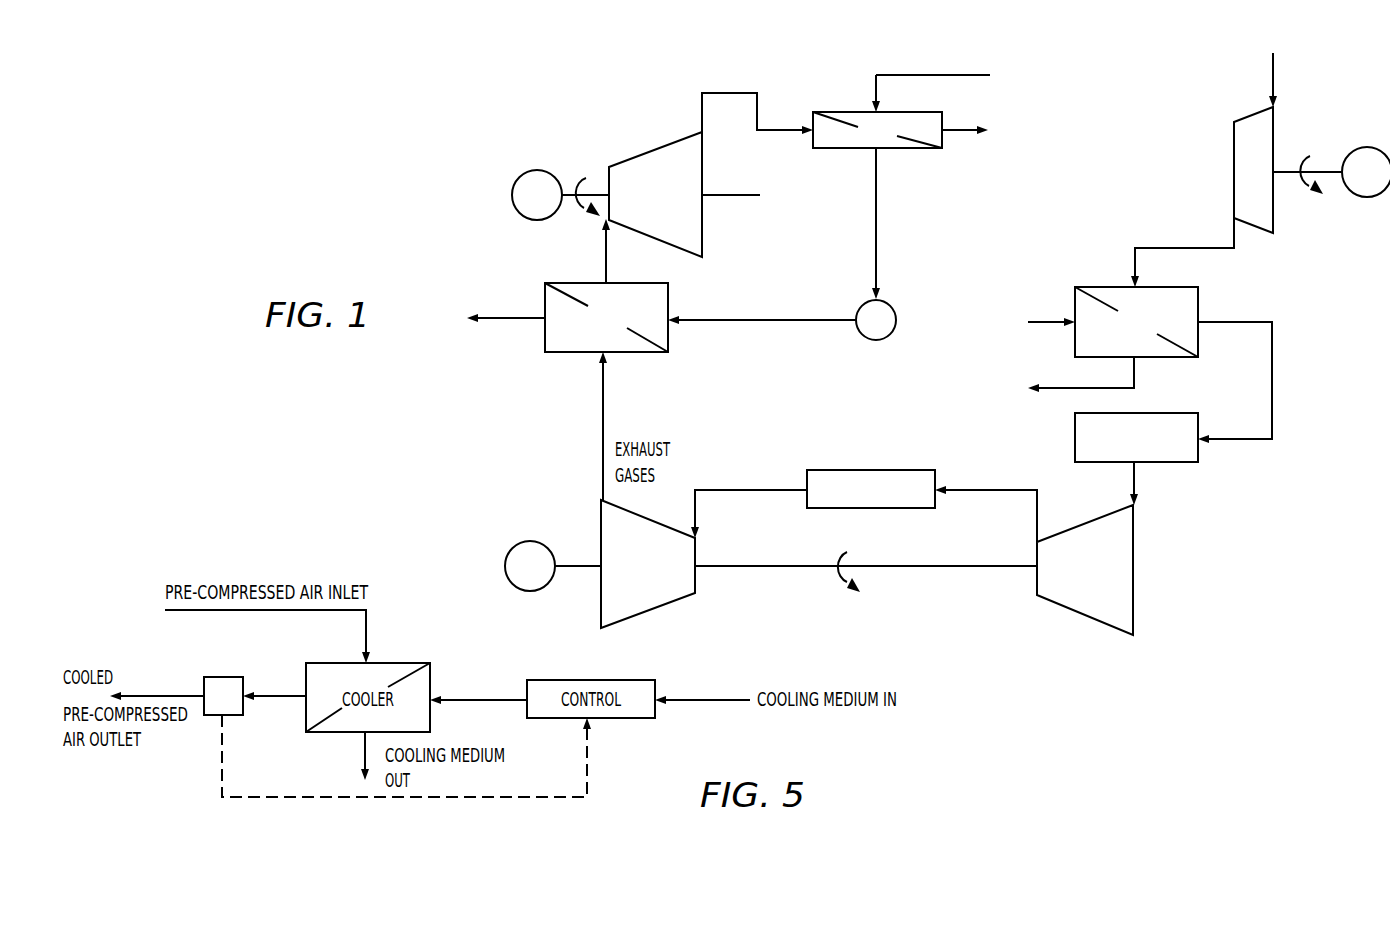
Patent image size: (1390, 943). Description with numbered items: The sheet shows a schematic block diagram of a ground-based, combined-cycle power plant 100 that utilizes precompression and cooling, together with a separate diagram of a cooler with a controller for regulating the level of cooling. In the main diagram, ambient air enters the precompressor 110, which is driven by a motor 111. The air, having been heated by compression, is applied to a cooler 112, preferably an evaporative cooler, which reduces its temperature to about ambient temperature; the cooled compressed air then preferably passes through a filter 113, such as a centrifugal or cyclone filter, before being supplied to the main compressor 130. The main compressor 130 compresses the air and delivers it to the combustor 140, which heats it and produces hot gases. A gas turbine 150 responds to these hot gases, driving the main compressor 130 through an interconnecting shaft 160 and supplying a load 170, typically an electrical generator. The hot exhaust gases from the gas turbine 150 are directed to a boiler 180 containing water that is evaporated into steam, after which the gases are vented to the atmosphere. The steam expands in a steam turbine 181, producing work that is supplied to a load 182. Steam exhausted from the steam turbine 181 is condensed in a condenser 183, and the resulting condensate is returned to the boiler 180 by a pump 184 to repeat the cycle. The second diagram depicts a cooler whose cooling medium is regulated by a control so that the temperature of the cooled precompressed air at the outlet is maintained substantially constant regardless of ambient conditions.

The combined-cycle power plant 100 is at (382, 428).
The precompressor 110 is at (1274, 224).
The motor 111 is at (1362, 197).
The cooler 112 is at (1199, 298).
The filter 113 is at (1178, 462).
The main compressor 130 is at (1134, 552).
The combustor 140 is at (870, 470).
The gas turbine 150 is at (638, 625).
The interconnecting shaft 160 is at (768, 572).
The load 170 is at (532, 591).
The boiler 180 is at (640, 353).
The steam turbine 181 is at (705, 236).
The load 182 is at (540, 221).
The condenser 183 is at (897, 149).
The pump 184 is at (888, 304).